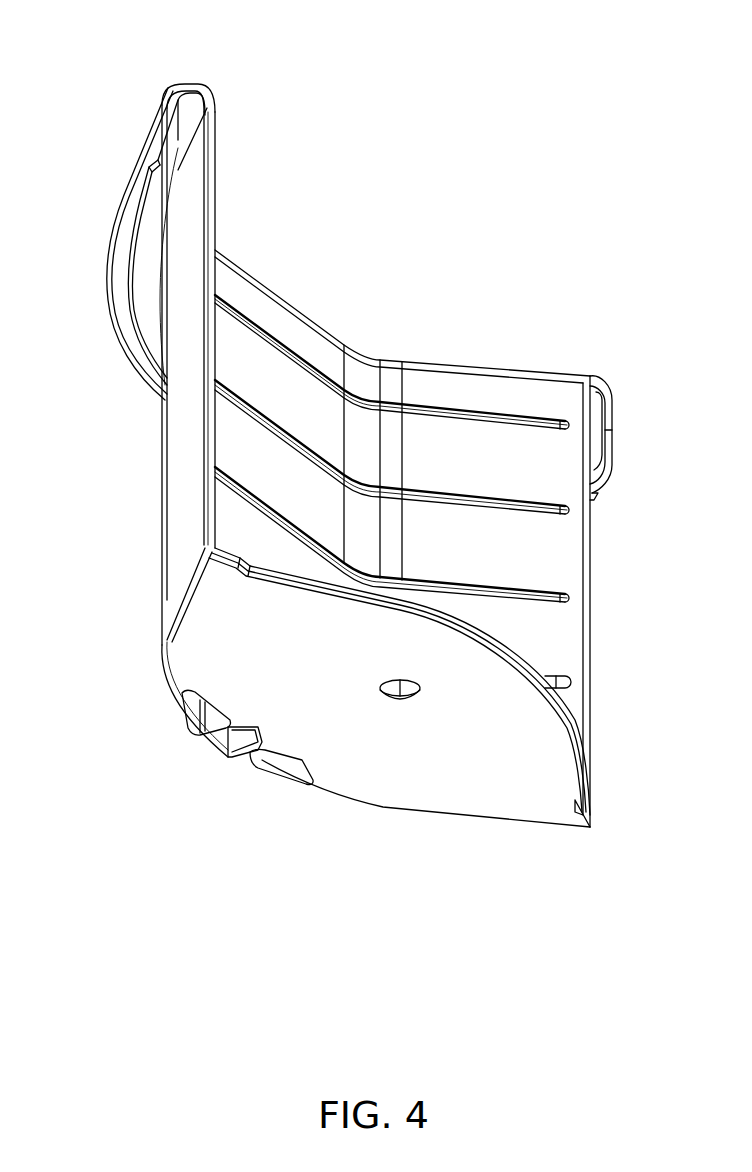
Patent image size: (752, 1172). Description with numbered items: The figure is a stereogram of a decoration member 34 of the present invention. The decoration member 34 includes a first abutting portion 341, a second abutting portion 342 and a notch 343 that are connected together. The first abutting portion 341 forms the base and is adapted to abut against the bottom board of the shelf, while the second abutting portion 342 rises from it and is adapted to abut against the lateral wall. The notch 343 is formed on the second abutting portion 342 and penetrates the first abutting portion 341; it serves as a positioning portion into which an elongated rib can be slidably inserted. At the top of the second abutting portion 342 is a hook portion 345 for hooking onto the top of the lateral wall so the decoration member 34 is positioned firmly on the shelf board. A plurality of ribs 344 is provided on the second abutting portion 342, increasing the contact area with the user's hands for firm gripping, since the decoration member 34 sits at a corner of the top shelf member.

The decoration member 34 is at (600, 220).
The first abutting portion 341 is at (440, 792).
The second abutting portion 342 is at (188, 483).
The notch 343 is at (243, 735).
The ribs 344 is at (440, 405).
The hook portion 345 is at (152, 142).